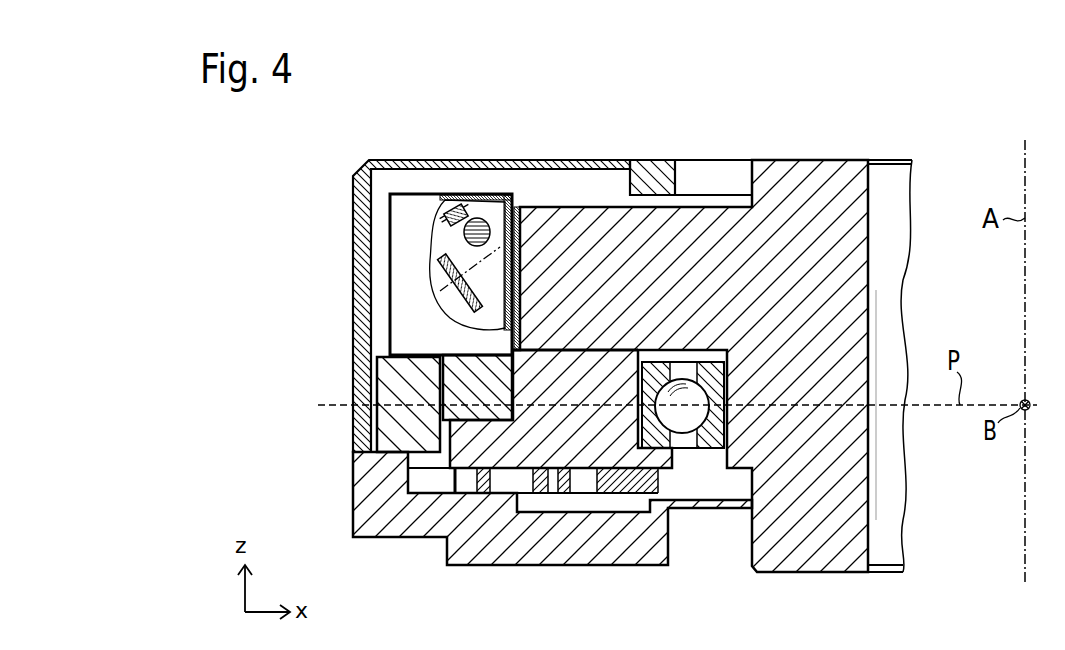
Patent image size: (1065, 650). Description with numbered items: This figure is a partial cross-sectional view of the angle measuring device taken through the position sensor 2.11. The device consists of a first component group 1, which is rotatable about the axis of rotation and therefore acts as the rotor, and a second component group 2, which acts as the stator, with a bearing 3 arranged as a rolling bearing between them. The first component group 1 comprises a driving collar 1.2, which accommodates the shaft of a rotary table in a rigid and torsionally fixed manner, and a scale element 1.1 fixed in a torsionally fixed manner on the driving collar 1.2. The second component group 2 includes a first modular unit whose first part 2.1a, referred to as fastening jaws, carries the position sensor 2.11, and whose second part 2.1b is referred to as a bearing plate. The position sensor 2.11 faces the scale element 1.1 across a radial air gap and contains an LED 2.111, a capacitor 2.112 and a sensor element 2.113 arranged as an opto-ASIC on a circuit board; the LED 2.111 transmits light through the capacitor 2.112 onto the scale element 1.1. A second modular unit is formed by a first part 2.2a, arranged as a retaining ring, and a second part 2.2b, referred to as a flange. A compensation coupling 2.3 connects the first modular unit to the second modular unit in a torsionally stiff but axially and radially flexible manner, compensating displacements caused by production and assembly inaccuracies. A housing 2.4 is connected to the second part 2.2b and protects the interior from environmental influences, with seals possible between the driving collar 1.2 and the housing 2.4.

The first component group 1 is at (903, 327).
The scale element 1.1 is at (515, 210).
The driving collar 1.2 is at (837, 258).
The second component group 2 is at (348, 322).
The first part of first modular unit 2.1a is at (450, 370).
The second part of first modular unit 2.1b is at (455, 473).
The position sensor 2.11 is at (390, 255).
The LED 2.111 is at (440, 217).
The capacitor 2.112 is at (473, 197).
The sensor element 2.113 is at (440, 290).
The first part of second modular unit 2.2a is at (380, 400).
The second part of second modular unit 2.2b is at (367, 502).
The compensation coupling 2.3 is at (612, 488).
The housing 2.4 is at (353, 185).
The bearing 3 is at (690, 435).